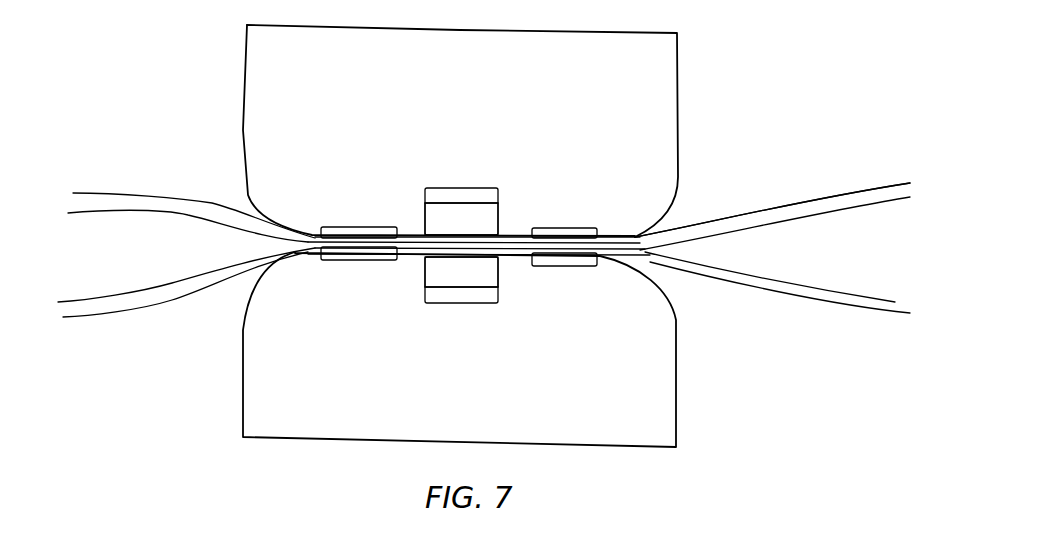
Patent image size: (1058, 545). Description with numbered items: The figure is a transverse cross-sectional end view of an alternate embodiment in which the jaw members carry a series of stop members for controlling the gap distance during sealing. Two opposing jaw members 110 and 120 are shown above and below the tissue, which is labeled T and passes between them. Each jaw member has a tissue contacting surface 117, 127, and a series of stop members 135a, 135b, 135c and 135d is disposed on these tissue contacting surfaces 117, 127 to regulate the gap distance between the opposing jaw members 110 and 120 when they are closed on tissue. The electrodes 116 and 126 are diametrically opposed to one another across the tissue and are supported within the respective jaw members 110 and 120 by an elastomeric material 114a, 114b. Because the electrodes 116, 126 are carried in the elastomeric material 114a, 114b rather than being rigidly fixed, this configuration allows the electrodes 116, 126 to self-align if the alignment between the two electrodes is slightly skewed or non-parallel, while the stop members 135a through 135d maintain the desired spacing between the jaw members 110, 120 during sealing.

The jaw member 110 is at (478, 98).
The jaw member 120 is at (495, 417).
The elastomeric material 114a is at (478, 195).
The elastomeric material 114b is at (480, 297).
The electrode 116 is at (487, 217).
The tissue contacting surface 117 is at (613, 238).
The electrode 126 is at (447, 272).
The tissue contacting surface 127 is at (522, 255).
The stop member 135a is at (353, 232).
The stop member 135b is at (347, 257).
The stop member 135c is at (567, 233).
The stop member 135d is at (578, 260).
The tape T is at (787, 207).